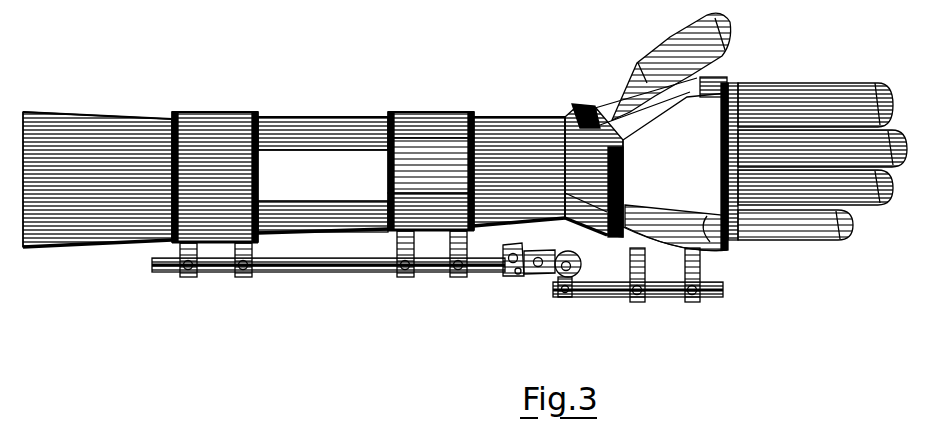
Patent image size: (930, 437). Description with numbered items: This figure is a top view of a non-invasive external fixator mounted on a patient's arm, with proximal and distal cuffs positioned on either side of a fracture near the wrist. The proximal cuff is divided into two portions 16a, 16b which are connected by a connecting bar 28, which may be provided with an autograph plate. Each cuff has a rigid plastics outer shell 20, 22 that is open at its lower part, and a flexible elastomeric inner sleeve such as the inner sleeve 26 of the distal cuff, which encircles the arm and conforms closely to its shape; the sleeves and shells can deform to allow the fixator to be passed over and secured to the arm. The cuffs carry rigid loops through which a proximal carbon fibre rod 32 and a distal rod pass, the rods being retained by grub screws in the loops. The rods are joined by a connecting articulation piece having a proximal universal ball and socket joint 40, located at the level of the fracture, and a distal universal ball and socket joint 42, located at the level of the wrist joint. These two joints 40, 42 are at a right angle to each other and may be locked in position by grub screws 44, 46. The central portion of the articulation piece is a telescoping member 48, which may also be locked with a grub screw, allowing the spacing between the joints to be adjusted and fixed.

The connecting bar 28 is at (313, 160).
The rigid plastics outer shell 20 is at (424, 146).
The proximal cuff portion 16a is at (213, 245).
The proximal cuff portion 16b is at (425, 245).
The proximal carbon fibre rod 32 is at (292, 273).
The proximal universal ball and socket joint 40 is at (505, 276).
The telescoping member 48 is at (534, 276).
The grub screw 44 is at (518, 277).
The distal universal ball and socket joint 42 is at (552, 277).
The grub screw 46 is at (593, 298).
The flexible elastomeric inner sleeve 26 is at (578, 110).
The rigid plastics outer shell 22 is at (720, 262).